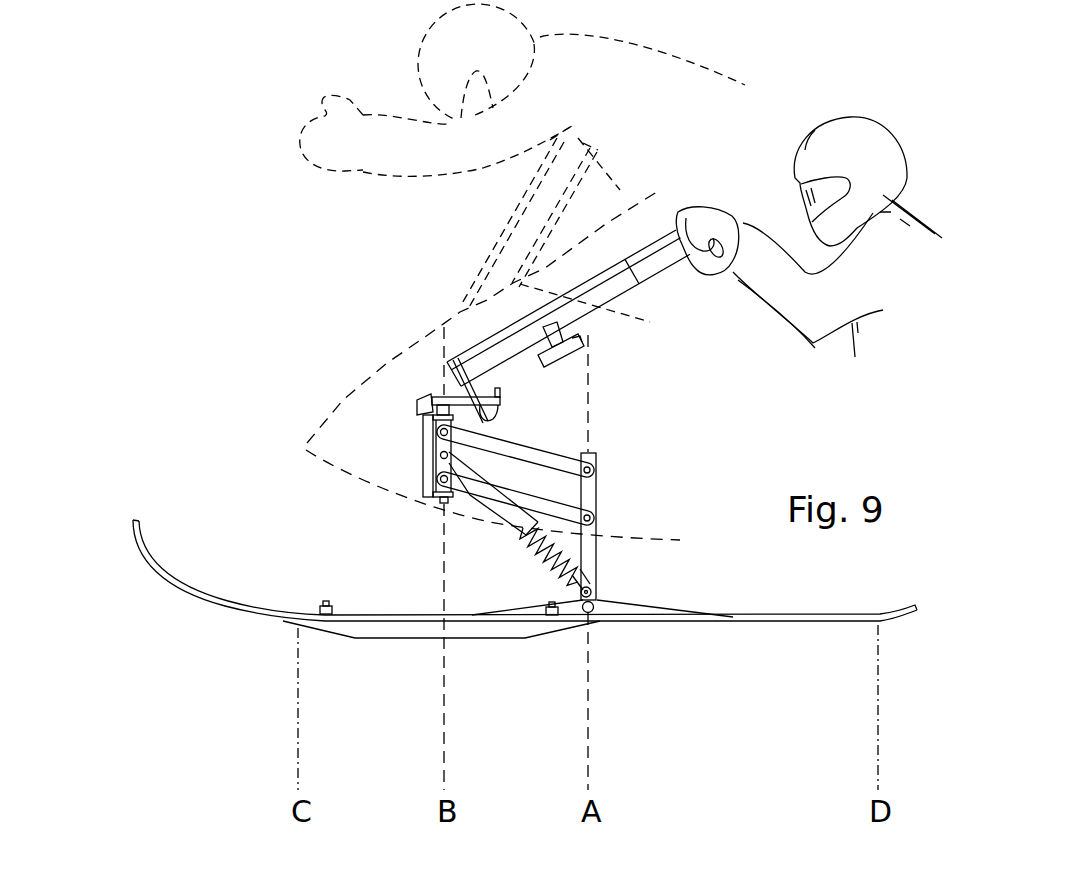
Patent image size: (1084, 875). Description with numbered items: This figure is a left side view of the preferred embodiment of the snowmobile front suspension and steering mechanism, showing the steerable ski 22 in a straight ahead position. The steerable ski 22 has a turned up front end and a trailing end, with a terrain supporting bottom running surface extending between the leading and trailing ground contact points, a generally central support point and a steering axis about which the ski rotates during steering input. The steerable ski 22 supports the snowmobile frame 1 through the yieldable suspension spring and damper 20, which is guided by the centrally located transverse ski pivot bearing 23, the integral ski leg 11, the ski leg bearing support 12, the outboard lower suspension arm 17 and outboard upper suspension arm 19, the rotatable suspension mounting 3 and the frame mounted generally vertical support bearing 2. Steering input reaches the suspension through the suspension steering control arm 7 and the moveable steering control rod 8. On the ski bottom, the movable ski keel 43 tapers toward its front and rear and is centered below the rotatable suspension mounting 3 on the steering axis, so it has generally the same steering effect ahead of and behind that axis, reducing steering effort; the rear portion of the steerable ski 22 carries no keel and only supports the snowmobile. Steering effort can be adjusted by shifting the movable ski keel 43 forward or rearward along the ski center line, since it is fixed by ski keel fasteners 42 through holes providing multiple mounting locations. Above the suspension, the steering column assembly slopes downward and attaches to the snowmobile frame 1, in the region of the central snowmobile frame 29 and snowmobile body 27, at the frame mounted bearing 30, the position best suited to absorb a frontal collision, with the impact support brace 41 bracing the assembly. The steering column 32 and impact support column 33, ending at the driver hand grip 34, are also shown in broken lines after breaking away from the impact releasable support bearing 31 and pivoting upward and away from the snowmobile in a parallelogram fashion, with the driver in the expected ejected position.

The snowmobile frame 1 is at (423, 438).
The frame mounted generally vertical support bearing 2 is at (420, 418).
The rotatable suspension mounting 3 is at (437, 397).
The suspension steering control arm 7 is at (500, 402).
The moveable steering control rod 8 is at (493, 418).
The ski leg 11 is at (624, 526).
The ski leg bearing support 12 is at (597, 545).
The outboard lower suspension arm 17 is at (598, 518).
The outboard upper suspension arm 19 is at (596, 470).
The yieldable suspension spring and damper 20 is at (520, 528).
The steerable ski 22 is at (160, 572).
The ski pivot bearing 23 is at (591, 607).
The snowmobile body 27 is at (304, 437).
The central snowmobile frame 29 is at (580, 347).
The frame mounted bearing 30 is at (425, 412).
The impact releasable support bearing 31 is at (566, 333).
The steering column 32 is at (650, 322).
The impact support column 33 is at (627, 265).
The driver hand grip 34 is at (713, 255).
The impact support brace 41 is at (443, 368).
The ski keel fastener 42 is at (330, 600).
The movable ski keel 43 is at (425, 638).